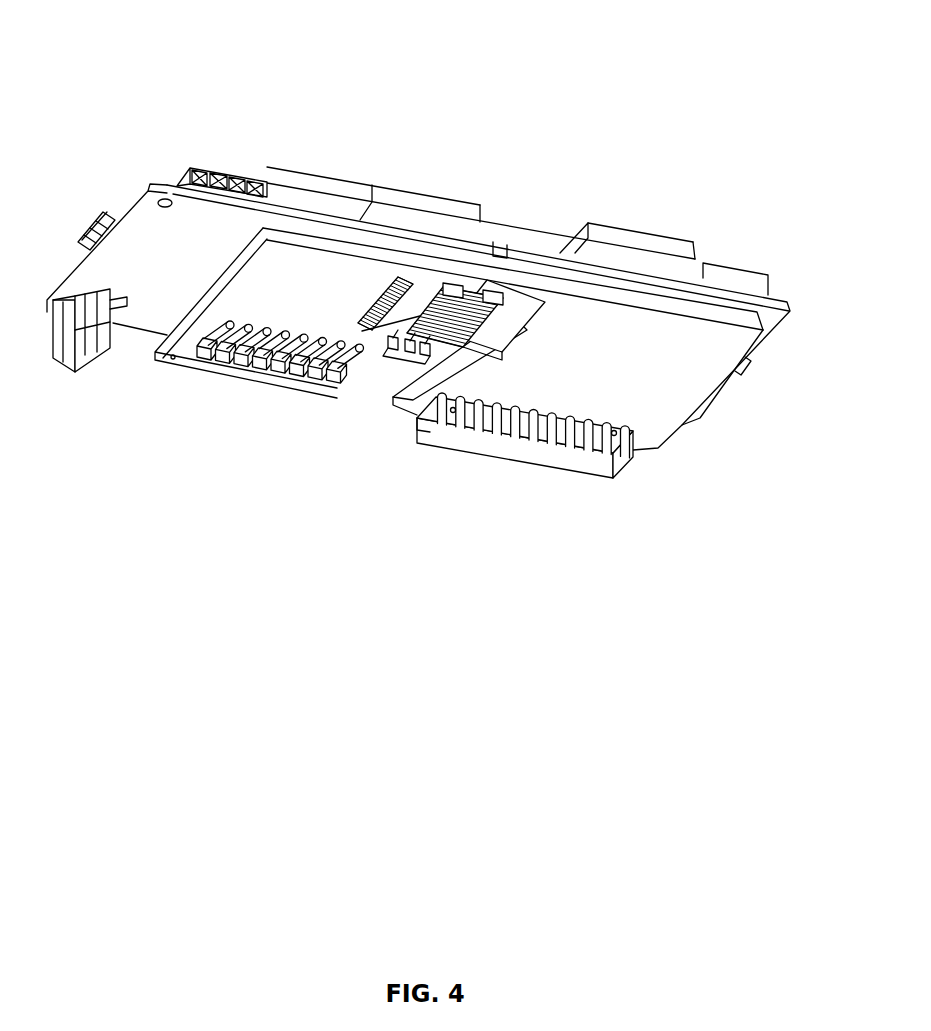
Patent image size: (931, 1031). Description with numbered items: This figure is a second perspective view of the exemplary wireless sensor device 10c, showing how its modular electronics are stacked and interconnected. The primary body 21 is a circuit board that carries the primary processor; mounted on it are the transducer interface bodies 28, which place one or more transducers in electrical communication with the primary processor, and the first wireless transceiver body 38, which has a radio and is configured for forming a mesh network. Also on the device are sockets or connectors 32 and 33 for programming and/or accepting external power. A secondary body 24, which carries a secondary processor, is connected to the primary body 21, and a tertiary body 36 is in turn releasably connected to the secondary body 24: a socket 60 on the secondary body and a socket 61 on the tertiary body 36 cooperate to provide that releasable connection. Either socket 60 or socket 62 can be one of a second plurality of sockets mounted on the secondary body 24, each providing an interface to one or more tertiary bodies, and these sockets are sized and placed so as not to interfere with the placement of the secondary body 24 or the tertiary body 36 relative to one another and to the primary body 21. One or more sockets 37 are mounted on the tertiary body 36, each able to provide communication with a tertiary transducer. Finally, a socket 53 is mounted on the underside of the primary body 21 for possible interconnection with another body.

The wireless sensor device 10c is at (83, 100).
The primary body 21 is at (690, 275).
The secondary body 24 is at (330, 318).
The transducer interface bodies 28 is at (318, 187).
The socket/connector 32 is at (192, 168).
The socket/connector 33 is at (78, 232).
The tertiary body 36 is at (658, 402).
The sockets 37 is at (553, 458).
The first wireless transceiver body 38 is at (745, 277).
The socket 53 is at (400, 365).
The socket 60 is at (420, 293).
The socket 61 is at (513, 325).
The socket 62 is at (262, 364).